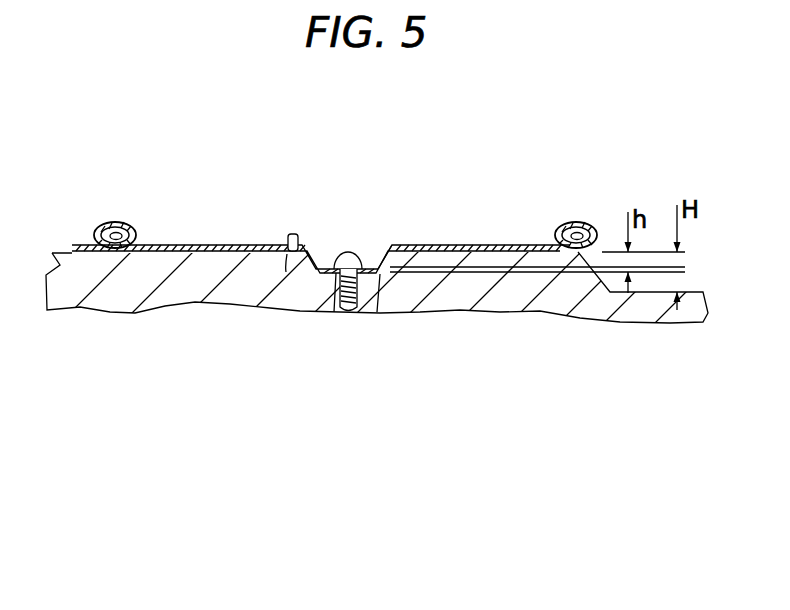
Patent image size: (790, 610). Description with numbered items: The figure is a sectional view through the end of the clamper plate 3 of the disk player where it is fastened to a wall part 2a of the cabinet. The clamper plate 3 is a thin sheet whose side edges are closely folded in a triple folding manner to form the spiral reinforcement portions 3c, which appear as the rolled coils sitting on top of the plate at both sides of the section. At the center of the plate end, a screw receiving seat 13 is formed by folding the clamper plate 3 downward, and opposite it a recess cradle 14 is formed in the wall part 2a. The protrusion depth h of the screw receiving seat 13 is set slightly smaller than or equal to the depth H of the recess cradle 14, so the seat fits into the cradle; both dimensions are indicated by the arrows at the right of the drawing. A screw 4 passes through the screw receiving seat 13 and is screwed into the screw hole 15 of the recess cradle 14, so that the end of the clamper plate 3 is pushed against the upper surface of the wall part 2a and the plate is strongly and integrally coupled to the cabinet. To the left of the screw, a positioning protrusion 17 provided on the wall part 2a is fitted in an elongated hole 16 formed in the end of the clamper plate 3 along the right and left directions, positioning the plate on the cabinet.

The wall part 2a is at (497, 300).
The clamper plate 3 is at (483, 238).
The spiral reinforcement portion 3c is at (112, 223).
The screw 4 is at (348, 252).
The screw receiving seat 13 is at (372, 256).
The recess cradle 14 is at (377, 312).
The screw hole 15 is at (347, 314).
The elongated hole 16 is at (288, 254).
The positioning protrusion 17 is at (292, 234).